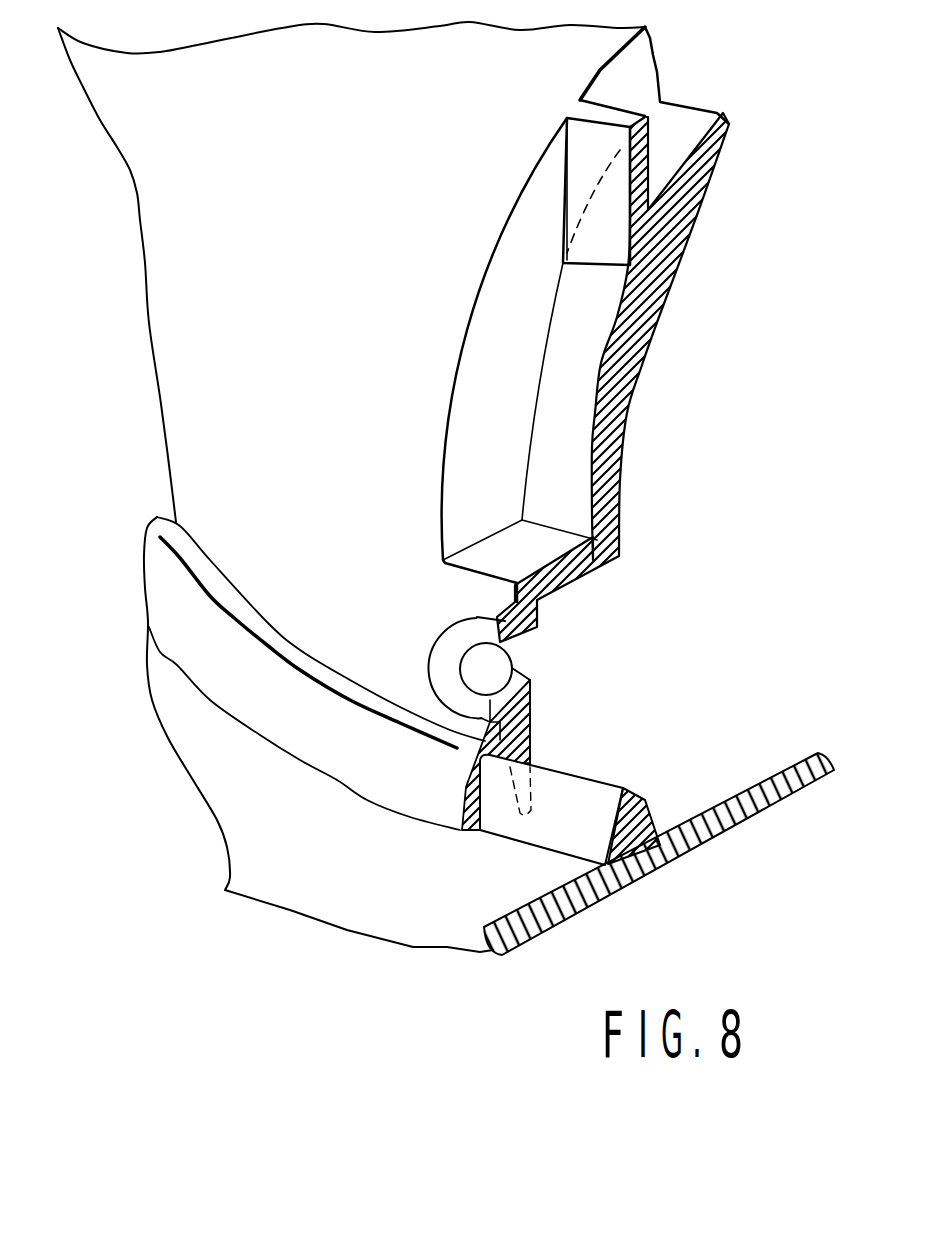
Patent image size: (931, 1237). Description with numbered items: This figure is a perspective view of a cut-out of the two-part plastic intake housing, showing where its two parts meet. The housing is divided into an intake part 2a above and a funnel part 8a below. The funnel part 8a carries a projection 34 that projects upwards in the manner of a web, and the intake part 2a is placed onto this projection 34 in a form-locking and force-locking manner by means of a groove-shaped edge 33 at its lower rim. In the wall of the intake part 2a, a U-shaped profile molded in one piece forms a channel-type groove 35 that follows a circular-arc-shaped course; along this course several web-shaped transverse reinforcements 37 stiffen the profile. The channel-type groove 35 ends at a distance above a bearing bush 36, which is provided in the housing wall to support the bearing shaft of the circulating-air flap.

The intake part 2a is at (333, 315).
The web-shaped transverse reinforcement 37 is at (588, 152).
The channel-type groove 35 is at (511, 422).
The bearing bush 36 is at (487, 668).
The groove-shaped edge 33 is at (427, 783).
The projection 34 is at (577, 808).
The funnel part 8a is at (308, 865).